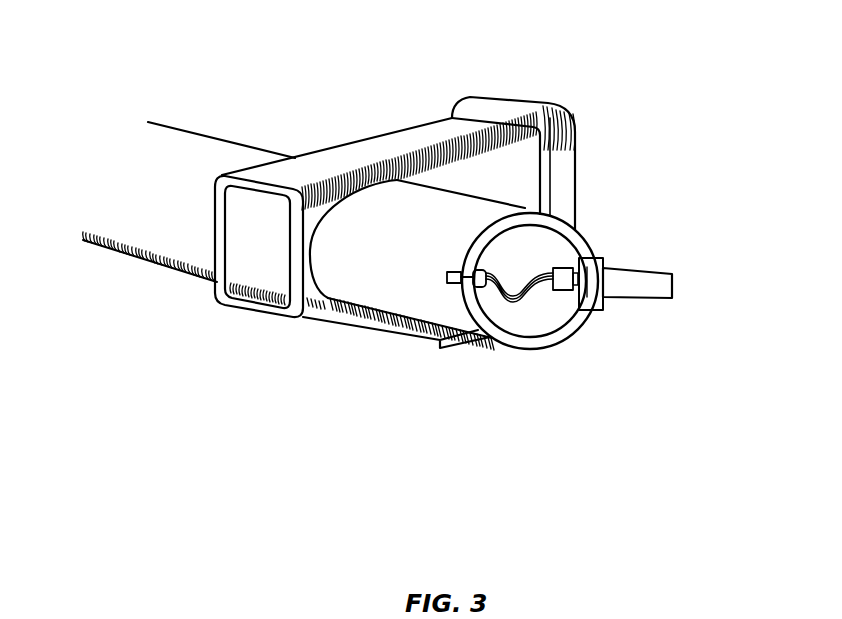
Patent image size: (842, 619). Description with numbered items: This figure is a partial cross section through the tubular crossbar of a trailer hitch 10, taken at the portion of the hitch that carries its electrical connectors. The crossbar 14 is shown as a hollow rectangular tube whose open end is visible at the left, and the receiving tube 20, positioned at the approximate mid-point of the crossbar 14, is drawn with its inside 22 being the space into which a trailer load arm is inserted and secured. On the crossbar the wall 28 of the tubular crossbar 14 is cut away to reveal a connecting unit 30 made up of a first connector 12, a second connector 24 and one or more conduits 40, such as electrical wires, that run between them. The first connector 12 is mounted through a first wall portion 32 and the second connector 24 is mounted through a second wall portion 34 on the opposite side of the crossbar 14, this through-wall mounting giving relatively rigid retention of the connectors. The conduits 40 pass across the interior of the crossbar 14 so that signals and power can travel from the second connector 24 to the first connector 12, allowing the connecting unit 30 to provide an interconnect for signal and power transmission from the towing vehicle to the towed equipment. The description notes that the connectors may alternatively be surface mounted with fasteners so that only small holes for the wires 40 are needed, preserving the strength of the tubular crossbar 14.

The trailer hitch 10 is at (350, 42).
The first connector 12 is at (657, 285).
The crossbar 14 is at (372, 285).
The receiving tube 20 is at (393, 145).
The inside of the receiving tube 22 is at (248, 257).
The second connector 24 is at (457, 285).
The wall of the tubular crossbar 28 is at (580, 245).
The connecting unit 30 is at (540, 308).
The first wall portion 32 is at (597, 312).
The second wall portion 34 is at (447, 272).
The conduits 40 is at (467, 340).